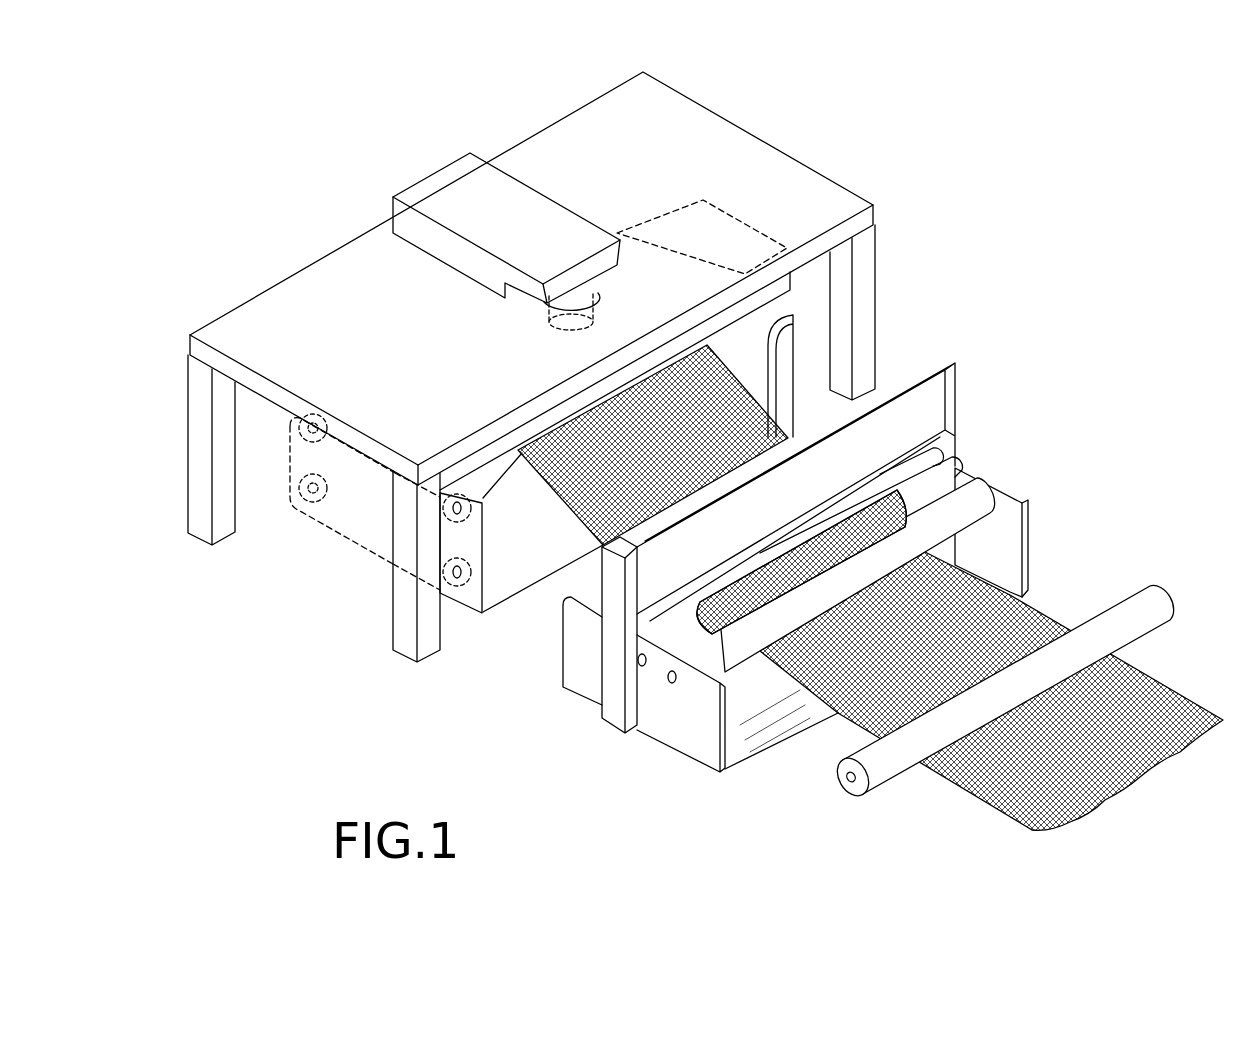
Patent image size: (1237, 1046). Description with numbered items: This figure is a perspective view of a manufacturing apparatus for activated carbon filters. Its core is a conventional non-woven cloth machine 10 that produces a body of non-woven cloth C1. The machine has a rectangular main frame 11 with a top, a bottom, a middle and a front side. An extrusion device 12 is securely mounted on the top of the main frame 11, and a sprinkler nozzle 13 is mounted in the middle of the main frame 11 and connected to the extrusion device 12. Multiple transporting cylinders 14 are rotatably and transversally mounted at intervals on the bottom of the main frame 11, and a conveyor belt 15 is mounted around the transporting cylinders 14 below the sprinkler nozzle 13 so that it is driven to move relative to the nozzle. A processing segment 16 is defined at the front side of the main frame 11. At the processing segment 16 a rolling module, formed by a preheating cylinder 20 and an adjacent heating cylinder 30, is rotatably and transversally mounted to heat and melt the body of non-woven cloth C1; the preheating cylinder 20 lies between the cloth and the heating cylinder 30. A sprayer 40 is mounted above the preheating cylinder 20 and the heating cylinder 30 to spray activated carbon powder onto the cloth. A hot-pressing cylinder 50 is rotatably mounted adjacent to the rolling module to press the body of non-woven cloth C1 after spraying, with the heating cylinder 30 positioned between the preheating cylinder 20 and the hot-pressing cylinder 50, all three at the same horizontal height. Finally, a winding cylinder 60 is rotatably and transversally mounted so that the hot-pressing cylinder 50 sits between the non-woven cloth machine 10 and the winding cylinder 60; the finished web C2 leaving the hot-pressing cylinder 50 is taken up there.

The non-woven cloth machine 10 is at (540, 367).
The main frame 11 is at (542, 142).
The extrusion device 12 is at (425, 190).
The sprinkler nozzle 13 is at (677, 228).
The transporting cylinders 14 is at (343, 490).
The conveyor belt 15 is at (290, 456).
The processing segment 16 is at (532, 657).
The preheating cylinder 20 is at (938, 445).
The heating cylinder 30 is at (965, 472).
The sprayer 40 is at (935, 372).
The hot-pressing cylinder 50 is at (1003, 500).
The winding cylinder 60 is at (1165, 628).
The body of non-woven cloth C1 is at (565, 497).
The second conveyor belt C2 is at (1030, 617).